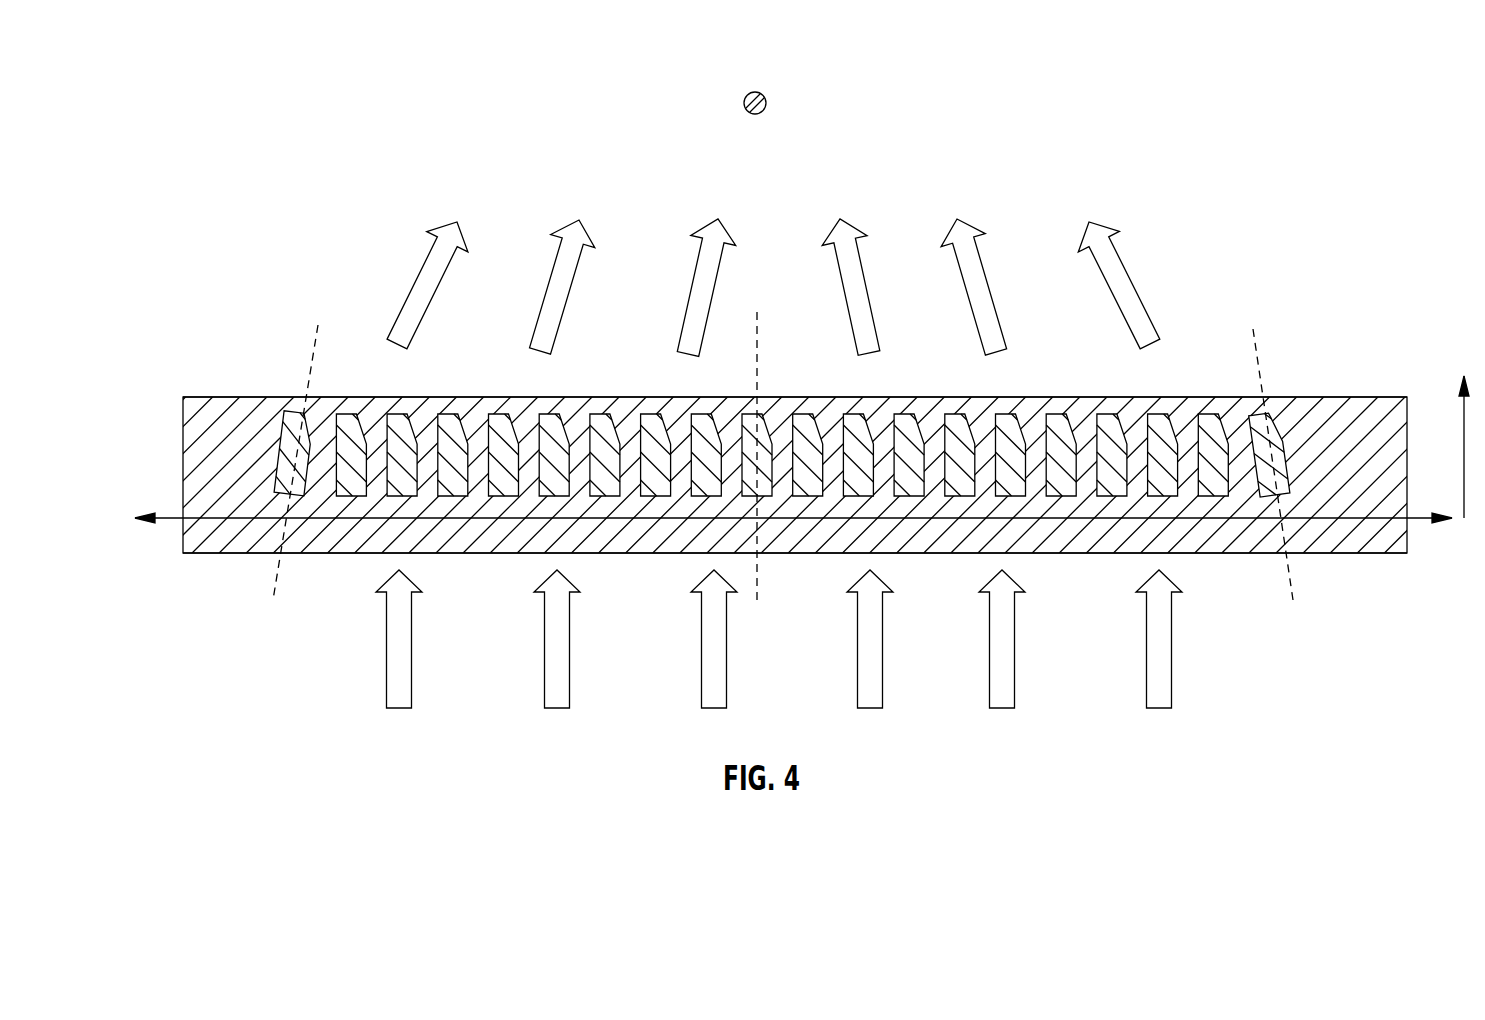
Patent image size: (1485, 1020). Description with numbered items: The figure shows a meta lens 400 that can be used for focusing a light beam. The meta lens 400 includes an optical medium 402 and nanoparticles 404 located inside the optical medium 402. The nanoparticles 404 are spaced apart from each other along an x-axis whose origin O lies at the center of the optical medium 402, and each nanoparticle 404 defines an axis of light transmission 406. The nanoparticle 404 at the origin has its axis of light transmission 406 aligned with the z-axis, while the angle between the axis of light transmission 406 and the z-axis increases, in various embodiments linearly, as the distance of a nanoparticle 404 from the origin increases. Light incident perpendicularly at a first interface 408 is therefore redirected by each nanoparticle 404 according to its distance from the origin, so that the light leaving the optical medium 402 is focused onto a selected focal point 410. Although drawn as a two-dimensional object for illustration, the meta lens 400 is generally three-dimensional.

The meta lens 400 is at (1350, 114).
The optical medium 402 is at (183, 477).
The nanoparticles 404 is at (400, 413).
The axis of light transmission 406 is at (312, 345).
The first interface 408 is at (1212, 554).
The focal point 410 is at (766, 106).